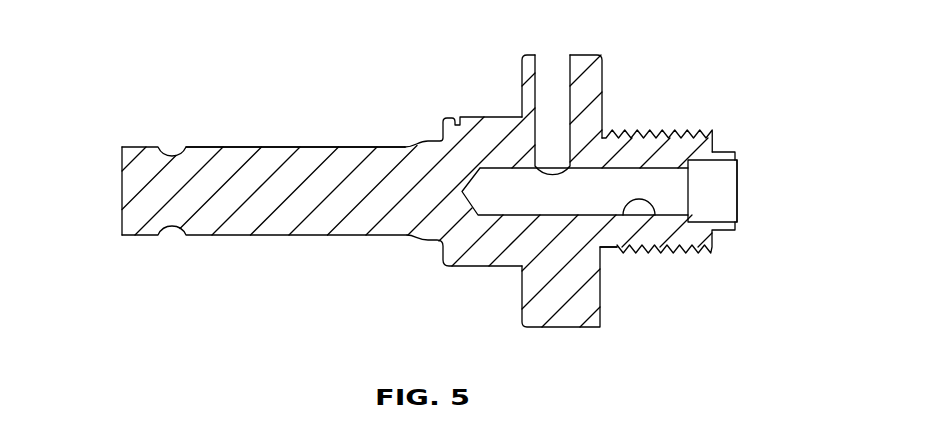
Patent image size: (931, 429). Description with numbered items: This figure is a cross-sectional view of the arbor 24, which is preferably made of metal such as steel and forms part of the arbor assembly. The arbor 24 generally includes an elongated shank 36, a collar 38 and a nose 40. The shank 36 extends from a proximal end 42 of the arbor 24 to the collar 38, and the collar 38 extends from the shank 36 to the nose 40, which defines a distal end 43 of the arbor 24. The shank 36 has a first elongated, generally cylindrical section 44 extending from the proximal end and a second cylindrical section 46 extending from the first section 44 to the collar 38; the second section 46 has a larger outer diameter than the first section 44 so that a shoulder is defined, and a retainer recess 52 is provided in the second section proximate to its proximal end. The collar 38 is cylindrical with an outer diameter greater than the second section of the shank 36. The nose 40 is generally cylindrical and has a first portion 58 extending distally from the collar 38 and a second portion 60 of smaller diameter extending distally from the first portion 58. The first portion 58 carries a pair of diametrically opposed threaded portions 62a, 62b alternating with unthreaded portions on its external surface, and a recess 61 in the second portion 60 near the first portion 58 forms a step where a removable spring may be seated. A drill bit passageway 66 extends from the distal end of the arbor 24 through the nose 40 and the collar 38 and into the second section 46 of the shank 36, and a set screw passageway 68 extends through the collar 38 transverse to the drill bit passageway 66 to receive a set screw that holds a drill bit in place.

The arbor 24 is at (340, 260).
The shank 36 is at (248, 148).
The collar 38 is at (575, 328).
The nose 40 is at (630, 130).
The proximal end 42 is at (122, 195).
The distal end 43 is at (739, 197).
The first cylindrical section 44 is at (318, 146).
The second cylindrical section 46 is at (486, 268).
The retainer recess 52 is at (458, 116).
The first portion 58 is at (650, 234).
The second portion 60 is at (739, 159).
The recess 61 is at (737, 152).
The threaded portion 62a is at (712, 156).
The threaded portion 62b is at (689, 253).
The drill bit passageway 66 is at (653, 215).
The set screw passageway 68 is at (571, 80).